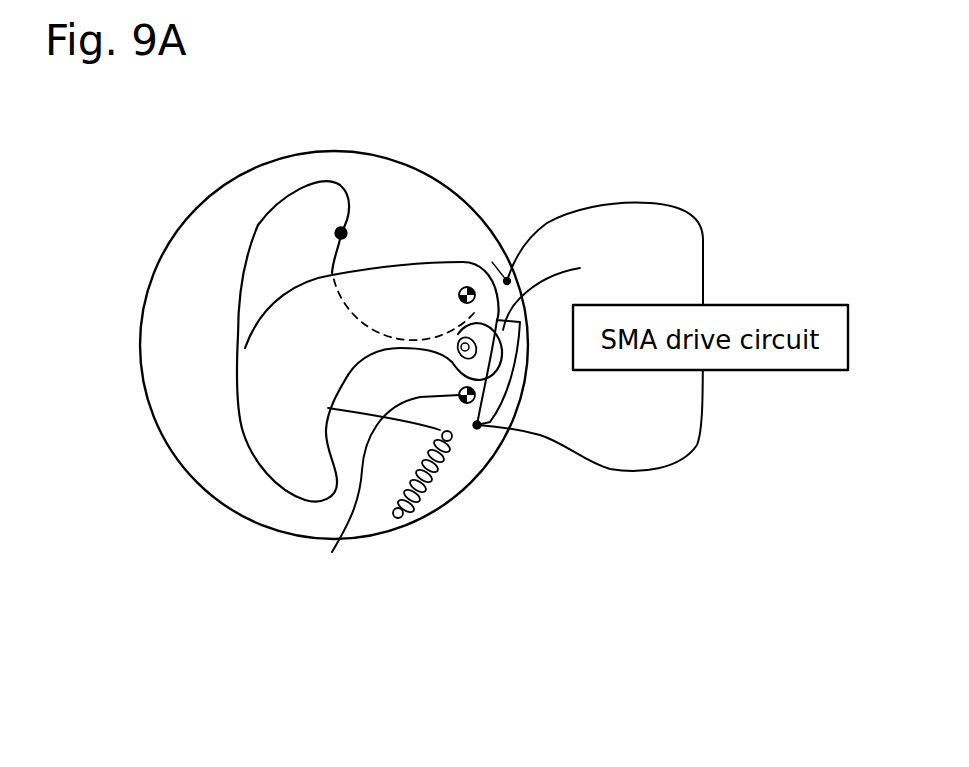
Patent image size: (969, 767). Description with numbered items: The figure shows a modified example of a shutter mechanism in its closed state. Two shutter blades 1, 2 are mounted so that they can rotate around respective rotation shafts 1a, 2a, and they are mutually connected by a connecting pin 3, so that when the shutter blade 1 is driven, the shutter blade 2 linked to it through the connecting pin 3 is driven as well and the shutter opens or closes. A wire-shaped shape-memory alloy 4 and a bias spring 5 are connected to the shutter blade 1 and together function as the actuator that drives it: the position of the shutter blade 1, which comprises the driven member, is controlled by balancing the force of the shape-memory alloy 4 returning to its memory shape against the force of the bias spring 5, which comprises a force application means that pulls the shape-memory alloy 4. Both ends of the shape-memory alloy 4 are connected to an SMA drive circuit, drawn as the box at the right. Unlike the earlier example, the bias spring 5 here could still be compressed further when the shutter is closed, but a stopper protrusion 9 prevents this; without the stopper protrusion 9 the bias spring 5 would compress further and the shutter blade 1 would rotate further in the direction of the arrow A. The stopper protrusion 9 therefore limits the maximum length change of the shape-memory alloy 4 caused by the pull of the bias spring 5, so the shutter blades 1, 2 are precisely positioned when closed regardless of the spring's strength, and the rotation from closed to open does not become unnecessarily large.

The shutter blade 1 is at (280, 253).
The rotation shaft 1a is at (392, 487).
The shutter blade 2 is at (253, 428).
The rotation shaft 2a is at (478, 262).
The connecting pin 3 is at (467, 286).
The shape-memory alloy 4 is at (590, 336).
The bias spring 5 is at (450, 478).
The stopper protrusion 9 is at (347, 230).
The arrow A is at (364, 174).